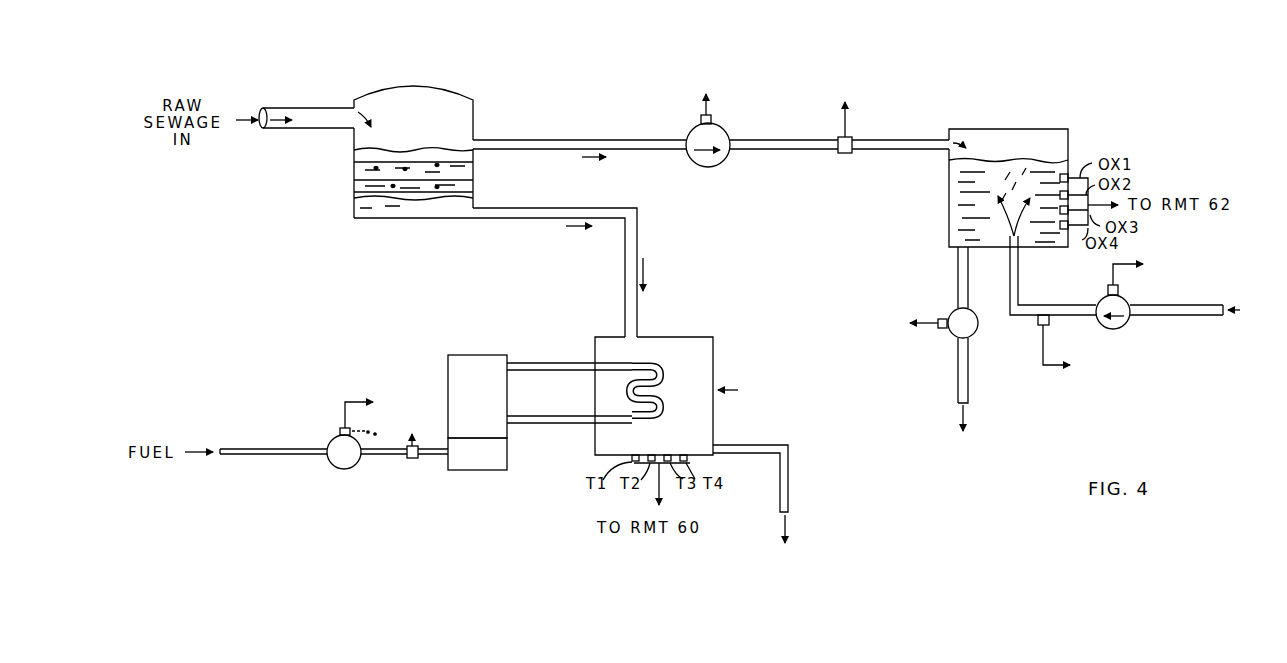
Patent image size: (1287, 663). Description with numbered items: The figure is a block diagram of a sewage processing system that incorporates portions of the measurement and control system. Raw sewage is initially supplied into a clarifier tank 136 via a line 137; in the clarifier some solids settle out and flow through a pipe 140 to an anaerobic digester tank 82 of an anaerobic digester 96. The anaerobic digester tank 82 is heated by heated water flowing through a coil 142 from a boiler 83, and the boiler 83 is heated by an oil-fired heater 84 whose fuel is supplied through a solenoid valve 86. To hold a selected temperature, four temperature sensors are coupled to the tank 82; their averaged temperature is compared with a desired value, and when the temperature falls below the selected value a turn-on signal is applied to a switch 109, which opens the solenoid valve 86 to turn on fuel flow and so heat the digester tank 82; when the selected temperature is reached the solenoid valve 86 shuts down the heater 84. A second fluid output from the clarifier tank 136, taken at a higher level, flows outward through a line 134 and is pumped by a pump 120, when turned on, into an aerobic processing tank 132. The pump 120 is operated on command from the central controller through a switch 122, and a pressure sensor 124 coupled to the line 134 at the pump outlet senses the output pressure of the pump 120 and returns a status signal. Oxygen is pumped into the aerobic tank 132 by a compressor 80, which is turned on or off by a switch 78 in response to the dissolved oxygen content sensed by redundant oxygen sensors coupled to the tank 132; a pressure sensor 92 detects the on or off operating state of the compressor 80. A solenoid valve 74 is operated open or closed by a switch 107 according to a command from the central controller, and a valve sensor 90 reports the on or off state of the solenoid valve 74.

The line 137 is at (276, 108).
The clarifier tank 136 is at (354, 178).
The line 134 is at (568, 140).
The pump 120 is at (724, 136).
The switch 122 is at (711, 118).
The pressure sensor 124 is at (842, 153).
The pipe 140 is at (528, 208).
The tank 132 is at (949, 203).
The solenoid valve 74 is at (976, 329).
The switch 107 is at (941, 331).
The compressor 80 is at (1120, 327).
The switch 78 is at (1119, 291).
The valve sensor 90 is at (1049, 324).
The anaerobic digester tank 82 is at (680, 337).
The anaerobic digester 96 is at (741, 390).
The coil 142 is at (658, 402).
The boiler 83 is at (448, 358).
The heater 84 is at (480, 470).
The solenoid valve 86 is at (344, 469).
The switch 109 is at (340, 432).
The pressure sensor 92 is at (416, 460).